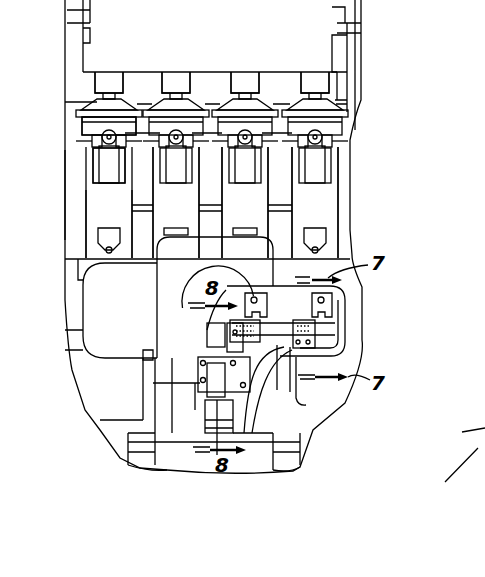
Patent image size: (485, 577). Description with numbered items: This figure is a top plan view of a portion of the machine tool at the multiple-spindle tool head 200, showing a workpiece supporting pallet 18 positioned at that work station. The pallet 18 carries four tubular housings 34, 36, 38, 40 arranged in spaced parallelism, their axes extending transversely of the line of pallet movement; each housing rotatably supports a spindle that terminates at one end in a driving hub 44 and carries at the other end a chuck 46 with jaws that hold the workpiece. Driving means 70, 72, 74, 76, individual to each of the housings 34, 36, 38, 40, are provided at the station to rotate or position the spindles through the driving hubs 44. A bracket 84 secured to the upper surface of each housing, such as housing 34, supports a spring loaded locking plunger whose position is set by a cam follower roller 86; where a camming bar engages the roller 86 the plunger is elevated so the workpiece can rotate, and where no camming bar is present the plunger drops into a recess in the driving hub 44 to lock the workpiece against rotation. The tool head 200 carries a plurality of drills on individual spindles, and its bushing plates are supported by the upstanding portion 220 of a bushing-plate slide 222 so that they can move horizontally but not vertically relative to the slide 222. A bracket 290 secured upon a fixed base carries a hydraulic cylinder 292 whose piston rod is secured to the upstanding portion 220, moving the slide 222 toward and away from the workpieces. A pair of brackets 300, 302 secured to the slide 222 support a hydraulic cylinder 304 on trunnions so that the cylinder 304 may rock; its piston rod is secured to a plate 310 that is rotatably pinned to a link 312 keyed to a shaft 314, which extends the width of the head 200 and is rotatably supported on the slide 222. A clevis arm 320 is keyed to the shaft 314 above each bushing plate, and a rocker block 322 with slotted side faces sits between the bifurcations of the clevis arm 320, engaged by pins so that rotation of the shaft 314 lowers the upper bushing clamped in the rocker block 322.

The workpiece supporting pallet 18 is at (78, 197).
The tubular housing 34 is at (103, 214).
The tubular housing 36 is at (190, 208).
The tubular housing 38 is at (258, 208).
The tubular housing 40 is at (326, 208).
The driving hub 44 is at (83, 137).
The chuck 46 is at (82, 272).
The driving means 70 is at (98, 78).
The driving means 72 is at (177, 78).
The driving means 74 is at (241, 76).
The driving means 76 is at (310, 73).
The bracket 84 is at (108, 156).
The cam follower roller 86 is at (109, 131).
The multiple-spindle tool head 200 is at (95, 298).
The upstanding portion of the bushing-plate slide 220 is at (282, 317).
The bushing-plate slide 222 is at (298, 370).
The bracket 290 is at (204, 433).
The hydraulic cylinder 292 is at (210, 405).
The bracket 300 is at (255, 380).
The bracket 302 is at (205, 382).
The hydraulic cylinder 304 is at (215, 385).
The plate 310 is at (162, 348).
The link 312 is at (168, 333).
The shaft 314 is at (336, 330).
The clevis arm 320 is at (342, 343).
The rocker block 322 is at (336, 291).